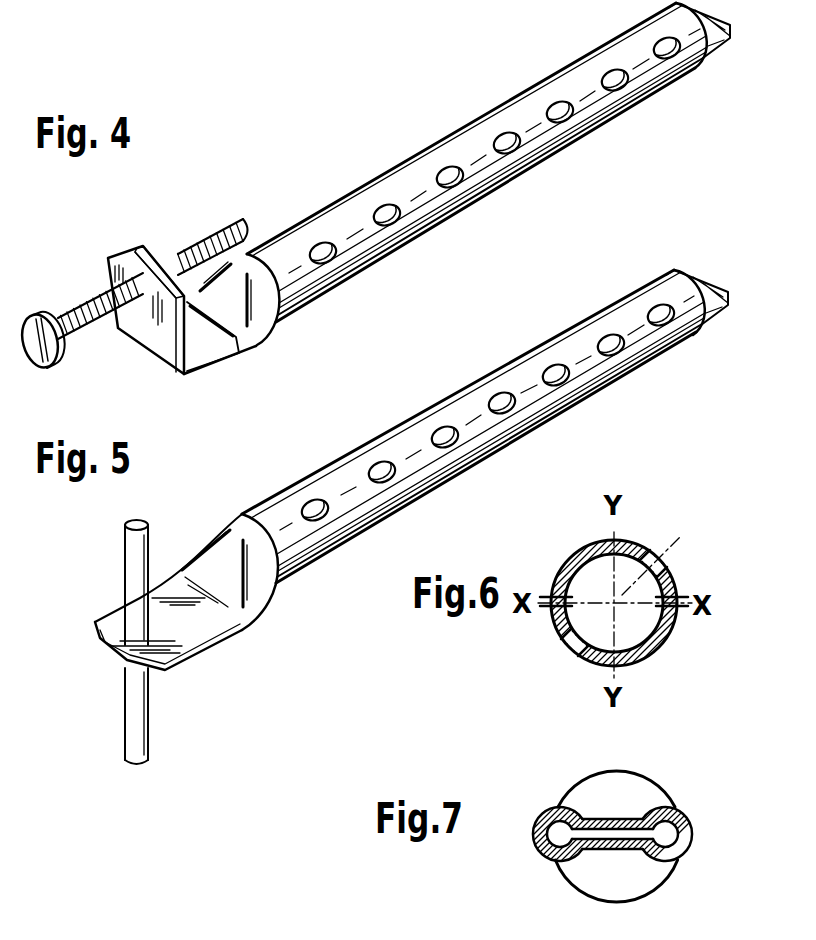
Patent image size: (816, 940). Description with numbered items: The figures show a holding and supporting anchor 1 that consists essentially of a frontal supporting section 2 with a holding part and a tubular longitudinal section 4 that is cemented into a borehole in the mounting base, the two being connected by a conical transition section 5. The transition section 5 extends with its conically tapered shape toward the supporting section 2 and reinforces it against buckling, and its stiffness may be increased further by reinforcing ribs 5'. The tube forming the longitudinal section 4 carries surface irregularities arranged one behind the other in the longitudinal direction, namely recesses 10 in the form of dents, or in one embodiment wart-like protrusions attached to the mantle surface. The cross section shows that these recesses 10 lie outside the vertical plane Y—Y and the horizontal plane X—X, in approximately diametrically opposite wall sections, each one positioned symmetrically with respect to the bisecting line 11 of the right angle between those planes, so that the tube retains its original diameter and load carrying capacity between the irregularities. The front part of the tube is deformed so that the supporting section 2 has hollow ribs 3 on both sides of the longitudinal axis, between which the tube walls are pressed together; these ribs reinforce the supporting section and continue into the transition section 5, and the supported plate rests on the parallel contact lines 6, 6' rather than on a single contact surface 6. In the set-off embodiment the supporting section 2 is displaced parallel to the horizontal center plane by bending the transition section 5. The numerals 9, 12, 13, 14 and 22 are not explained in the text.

In FIG. 4, the anchor 1 is at (488, 162).
In FIG. 4, the supporting section 2 is at (202, 347).
In FIG. 5, the supporting section 2 is at (203, 633).
In FIG. 7, the supporting section 2 is at (582, 812).
In FIG. 7, the hollow ribs 3 is at (683, 825).
In FIG. 4, the longitudinal section 4 is at (592, 118).
In FIG. 6, the longitudinal section 4 is at (590, 582).
In FIG. 4, the conical transition section 5 is at (276, 328).
In FIG. 7, the conical transition section 5 is at (612, 821).
In FIG. 4, the reinforcing ribs 5' is at (284, 301).
In FIG. 5, the reinforcing ribs 5' is at (214, 546).
In FIG. 5, the contact surface 6 is at (126, 642).
In FIG. 7, the contact line 6' is at (581, 813).
In FIG. 4, the rail end 9 is at (717, 70).
In FIG. 4, the recesses 10 is at (557, 100).
In FIG. 5, the recesses 10 is at (503, 393).
In FIG. 6, the recesses 10 is at (663, 567).
In FIG. 6, the bisecting line 11 is at (680, 537).
In FIG. 4, the clamp plate 12 is at (137, 298).
In FIG. 4, the bent tab 13 is at (164, 248).
In FIG. 4, the screw 14 is at (88, 300).
In FIG. 4, the threaded bore 22 is at (160, 328).